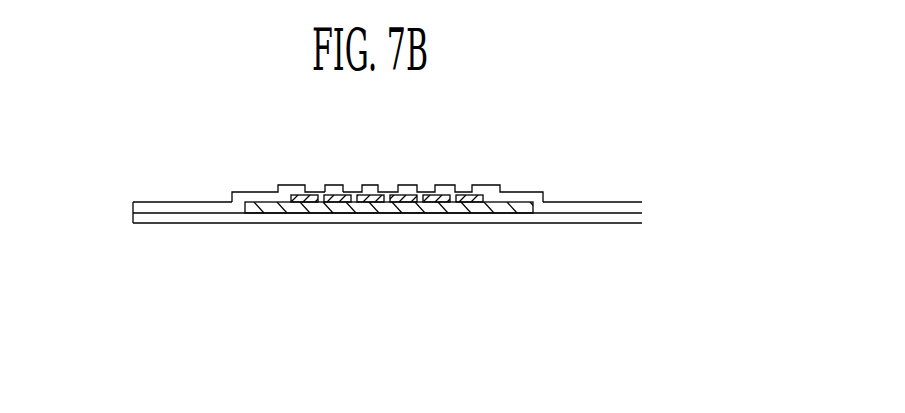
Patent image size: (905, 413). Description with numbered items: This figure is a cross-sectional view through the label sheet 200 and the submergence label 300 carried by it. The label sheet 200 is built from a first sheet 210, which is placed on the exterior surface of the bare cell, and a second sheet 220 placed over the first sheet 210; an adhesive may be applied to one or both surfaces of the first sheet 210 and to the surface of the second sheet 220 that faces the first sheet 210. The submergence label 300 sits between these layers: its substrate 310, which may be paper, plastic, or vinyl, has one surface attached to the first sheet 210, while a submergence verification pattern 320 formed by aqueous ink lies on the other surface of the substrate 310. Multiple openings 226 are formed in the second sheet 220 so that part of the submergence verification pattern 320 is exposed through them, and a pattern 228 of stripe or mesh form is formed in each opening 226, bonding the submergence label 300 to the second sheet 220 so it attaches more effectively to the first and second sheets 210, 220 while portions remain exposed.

The label sheet 200 is at (454, 163).
The first sheet 210 is at (642, 216).
The second sheet 220 is at (428, 152).
The openings 226 is at (387, 141).
The pattern 228 is at (333, 185).
The submergence label 300 is at (385, 269).
The substrate 310 is at (333, 207).
The submergence verification pattern 320 is at (383, 199).